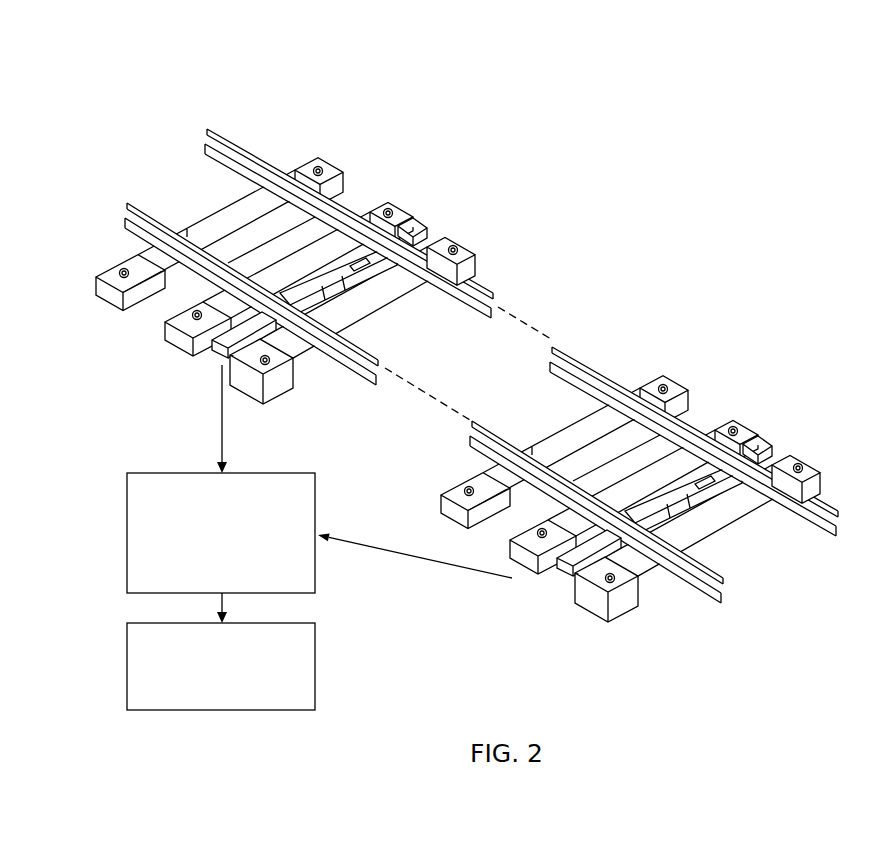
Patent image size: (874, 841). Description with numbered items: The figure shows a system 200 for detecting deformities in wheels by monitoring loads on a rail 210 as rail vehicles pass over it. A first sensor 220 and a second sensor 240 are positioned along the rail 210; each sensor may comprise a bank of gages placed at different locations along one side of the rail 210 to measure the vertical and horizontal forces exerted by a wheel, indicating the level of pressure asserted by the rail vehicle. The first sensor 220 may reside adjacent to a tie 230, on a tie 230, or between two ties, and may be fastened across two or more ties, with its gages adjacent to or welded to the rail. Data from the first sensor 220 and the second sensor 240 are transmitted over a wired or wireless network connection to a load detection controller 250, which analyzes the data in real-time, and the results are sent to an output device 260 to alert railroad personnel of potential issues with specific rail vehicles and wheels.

The system 200 is at (481, 70).
The rail 210 is at (146, 206).
The first sensor 220 is at (570, 573).
The tie 230 is at (113, 297).
The second sensor 240 is at (210, 357).
The load detection controller 250 is at (221, 533).
The output device 260 is at (221, 666).